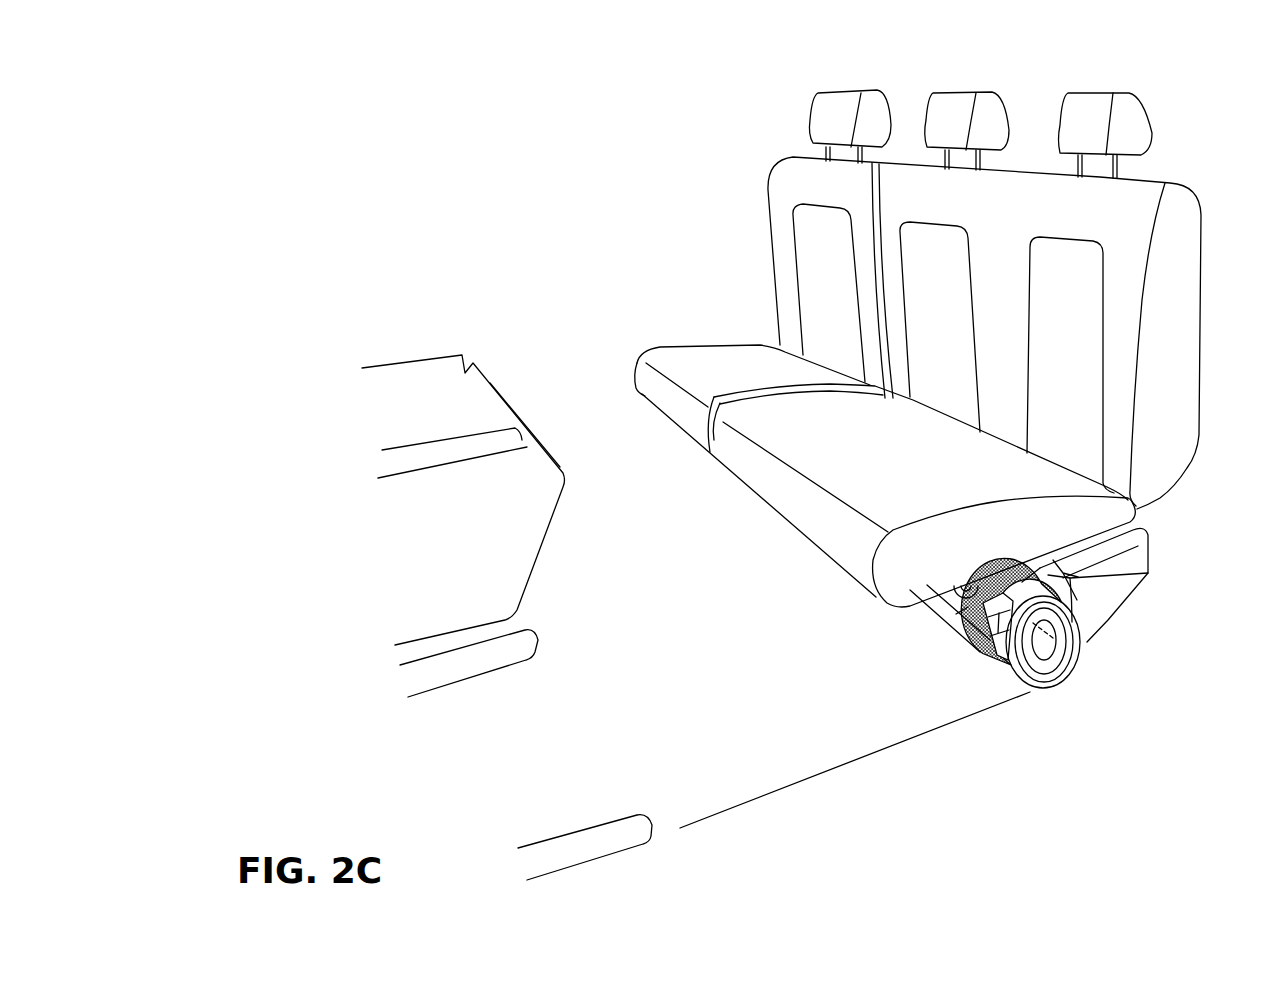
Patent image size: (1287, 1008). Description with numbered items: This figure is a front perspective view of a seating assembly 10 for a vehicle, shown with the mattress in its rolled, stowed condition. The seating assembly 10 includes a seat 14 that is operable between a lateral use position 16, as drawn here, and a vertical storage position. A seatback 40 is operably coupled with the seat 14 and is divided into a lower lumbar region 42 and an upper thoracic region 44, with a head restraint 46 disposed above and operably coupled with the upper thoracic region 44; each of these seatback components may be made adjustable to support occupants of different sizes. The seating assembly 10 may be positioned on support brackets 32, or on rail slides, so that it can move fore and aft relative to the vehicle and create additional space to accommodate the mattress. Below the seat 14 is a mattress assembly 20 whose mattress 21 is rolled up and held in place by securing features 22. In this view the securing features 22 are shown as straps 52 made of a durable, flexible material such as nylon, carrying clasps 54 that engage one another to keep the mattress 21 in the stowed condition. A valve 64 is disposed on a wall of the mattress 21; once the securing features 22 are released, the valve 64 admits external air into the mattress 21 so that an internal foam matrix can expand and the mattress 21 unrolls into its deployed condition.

The seating assembly 10 is at (949, 418).
The seat 14 is at (1095, 508).
The lateral use position 16 is at (941, 420).
The mattress assembly 20 is at (996, 676).
The mattress 21 is at (972, 612).
The securing features 22 is at (976, 648).
The support brackets 32 is at (1123, 590).
The seatback 40 is at (1016, 333).
The lower lumbar region 42 is at (1103, 323).
The upper thoracic region 44 is at (1108, 222).
The head restraint 46 is at (845, 102).
The straps 52 is at (1080, 580).
The clasps 54 is at (1033, 675).
The valve 64 is at (963, 600).